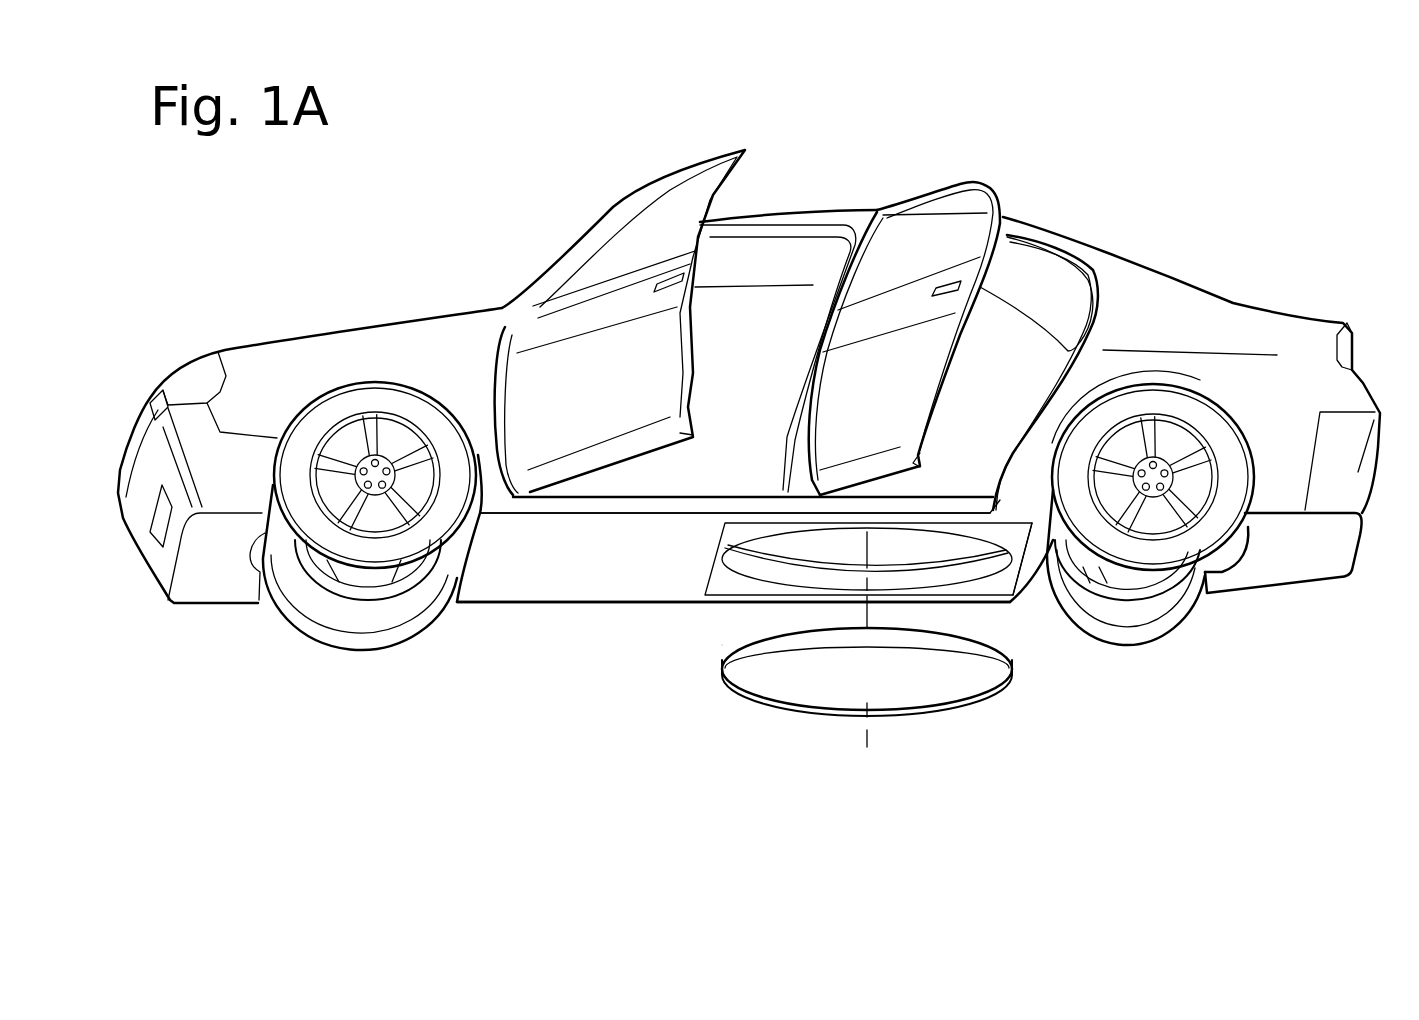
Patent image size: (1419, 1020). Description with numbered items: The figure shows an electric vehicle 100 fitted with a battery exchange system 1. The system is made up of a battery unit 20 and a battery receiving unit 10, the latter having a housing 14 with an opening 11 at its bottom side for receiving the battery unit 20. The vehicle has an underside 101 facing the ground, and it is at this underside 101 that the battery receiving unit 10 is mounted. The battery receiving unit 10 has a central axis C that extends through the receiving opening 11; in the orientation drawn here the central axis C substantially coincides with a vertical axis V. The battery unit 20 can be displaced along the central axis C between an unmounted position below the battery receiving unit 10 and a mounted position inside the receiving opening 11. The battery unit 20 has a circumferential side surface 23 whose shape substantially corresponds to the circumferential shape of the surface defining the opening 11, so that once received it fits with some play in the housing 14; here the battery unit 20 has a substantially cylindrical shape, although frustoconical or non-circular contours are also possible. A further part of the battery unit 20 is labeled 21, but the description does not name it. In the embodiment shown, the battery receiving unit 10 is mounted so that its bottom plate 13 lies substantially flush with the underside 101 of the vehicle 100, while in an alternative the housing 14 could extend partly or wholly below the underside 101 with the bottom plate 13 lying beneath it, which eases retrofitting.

The battery exchange system 1 is at (683, 715).
The battery receiving unit 10 is at (728, 600).
The opening 11 is at (933, 543).
The bottom plate 13 is at (733, 533).
The housing 14 is at (1013, 537).
The battery unit 20 is at (720, 673).
The pad housing 21 is at (973, 673).
The circumferential side surface 23 is at (765, 648).
The electric vehicle 100 is at (1167, 267).
The underside 101 is at (523, 555).
The vertical axis V is at (867, 737).
The central axis C is at (865, 693).